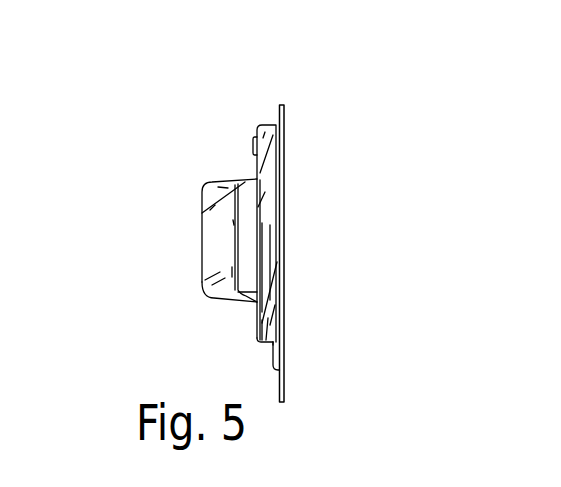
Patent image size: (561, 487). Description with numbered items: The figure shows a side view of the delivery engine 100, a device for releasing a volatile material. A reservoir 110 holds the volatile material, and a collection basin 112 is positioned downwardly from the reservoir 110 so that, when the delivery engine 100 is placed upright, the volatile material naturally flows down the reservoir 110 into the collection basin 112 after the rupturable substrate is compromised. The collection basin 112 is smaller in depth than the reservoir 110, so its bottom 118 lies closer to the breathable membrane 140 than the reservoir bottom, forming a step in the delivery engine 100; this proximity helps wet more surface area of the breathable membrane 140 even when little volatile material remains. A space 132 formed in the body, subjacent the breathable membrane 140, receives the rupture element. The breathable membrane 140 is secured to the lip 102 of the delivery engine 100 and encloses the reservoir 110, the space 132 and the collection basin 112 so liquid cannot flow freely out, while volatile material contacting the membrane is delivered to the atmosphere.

The delivery engine 100 is at (172, 120).
The lip 102 is at (285, 118).
The reservoir 110 is at (212, 247).
The collection basin 112 is at (274, 346).
The bottom 118 is at (273, 362).
The space 132 is at (268, 270).
The breathable membrane 140 is at (285, 180).